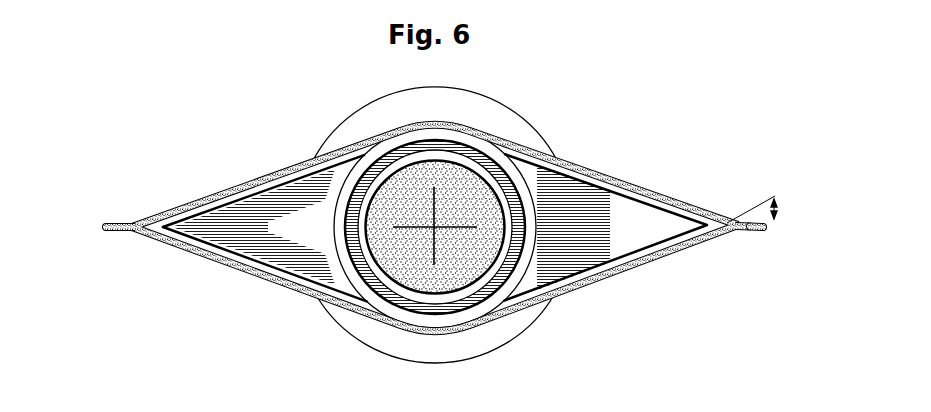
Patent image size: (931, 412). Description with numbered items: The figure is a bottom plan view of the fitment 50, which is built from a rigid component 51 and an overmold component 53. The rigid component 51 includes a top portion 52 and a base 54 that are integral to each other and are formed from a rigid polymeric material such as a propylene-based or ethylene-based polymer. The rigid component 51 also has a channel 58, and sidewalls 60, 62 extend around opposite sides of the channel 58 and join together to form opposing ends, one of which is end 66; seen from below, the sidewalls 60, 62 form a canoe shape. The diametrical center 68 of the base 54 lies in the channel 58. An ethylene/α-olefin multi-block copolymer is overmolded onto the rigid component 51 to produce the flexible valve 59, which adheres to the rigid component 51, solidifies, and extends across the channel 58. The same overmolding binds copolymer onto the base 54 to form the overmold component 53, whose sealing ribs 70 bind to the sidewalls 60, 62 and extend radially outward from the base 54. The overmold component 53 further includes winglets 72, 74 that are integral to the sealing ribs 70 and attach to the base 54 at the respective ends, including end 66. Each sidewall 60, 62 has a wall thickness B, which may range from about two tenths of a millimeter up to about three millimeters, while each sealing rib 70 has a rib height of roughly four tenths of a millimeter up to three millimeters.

The fitment 50 is at (675, 97).
The rigid component 51 is at (249, 156).
The top portion 52 is at (520, 104).
The overmold component 53 is at (727, 168).
The base 54 is at (242, 215).
The channel 58 is at (474, 272).
The flexible valve 59 is at (402, 172).
The sidewall 60 is at (297, 179).
The sidewall 62 is at (263, 282).
The end 66 is at (770, 231).
The diametrical center 68 is at (100, 232).
The sealing ribs 70 is at (589, 165).
The winglet 72 is at (123, 233).
The winglet 74 is at (742, 232).
The wall thickness B is at (774, 203).